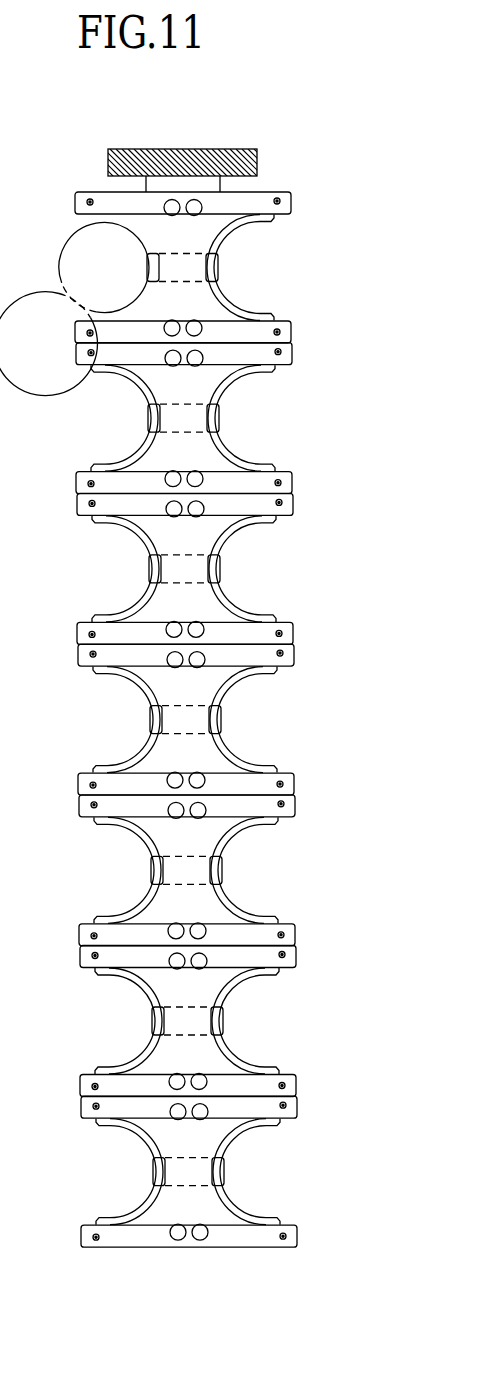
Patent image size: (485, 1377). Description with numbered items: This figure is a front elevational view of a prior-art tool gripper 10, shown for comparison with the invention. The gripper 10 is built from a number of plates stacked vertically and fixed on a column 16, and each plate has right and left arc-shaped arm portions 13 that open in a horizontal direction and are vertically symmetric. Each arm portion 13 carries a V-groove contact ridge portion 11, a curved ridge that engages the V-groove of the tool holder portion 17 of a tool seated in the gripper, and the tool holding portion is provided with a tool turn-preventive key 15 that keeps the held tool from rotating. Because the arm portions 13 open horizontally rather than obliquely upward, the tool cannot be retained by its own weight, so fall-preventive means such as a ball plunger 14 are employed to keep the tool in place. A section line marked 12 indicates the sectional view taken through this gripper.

The tool gripper 10 is at (205, 711).
The V-groove contact ridge portion 11 is at (292, 269).
The section line 12 is at (185, 750).
The arm portion 13 is at (335, 275).
The ball plunger 14 is at (224, 223).
The tool turn-preventive key 15 is at (246, 422).
The column 16 is at (146, 190).
The tool holder portion 17 is at (74, 308).